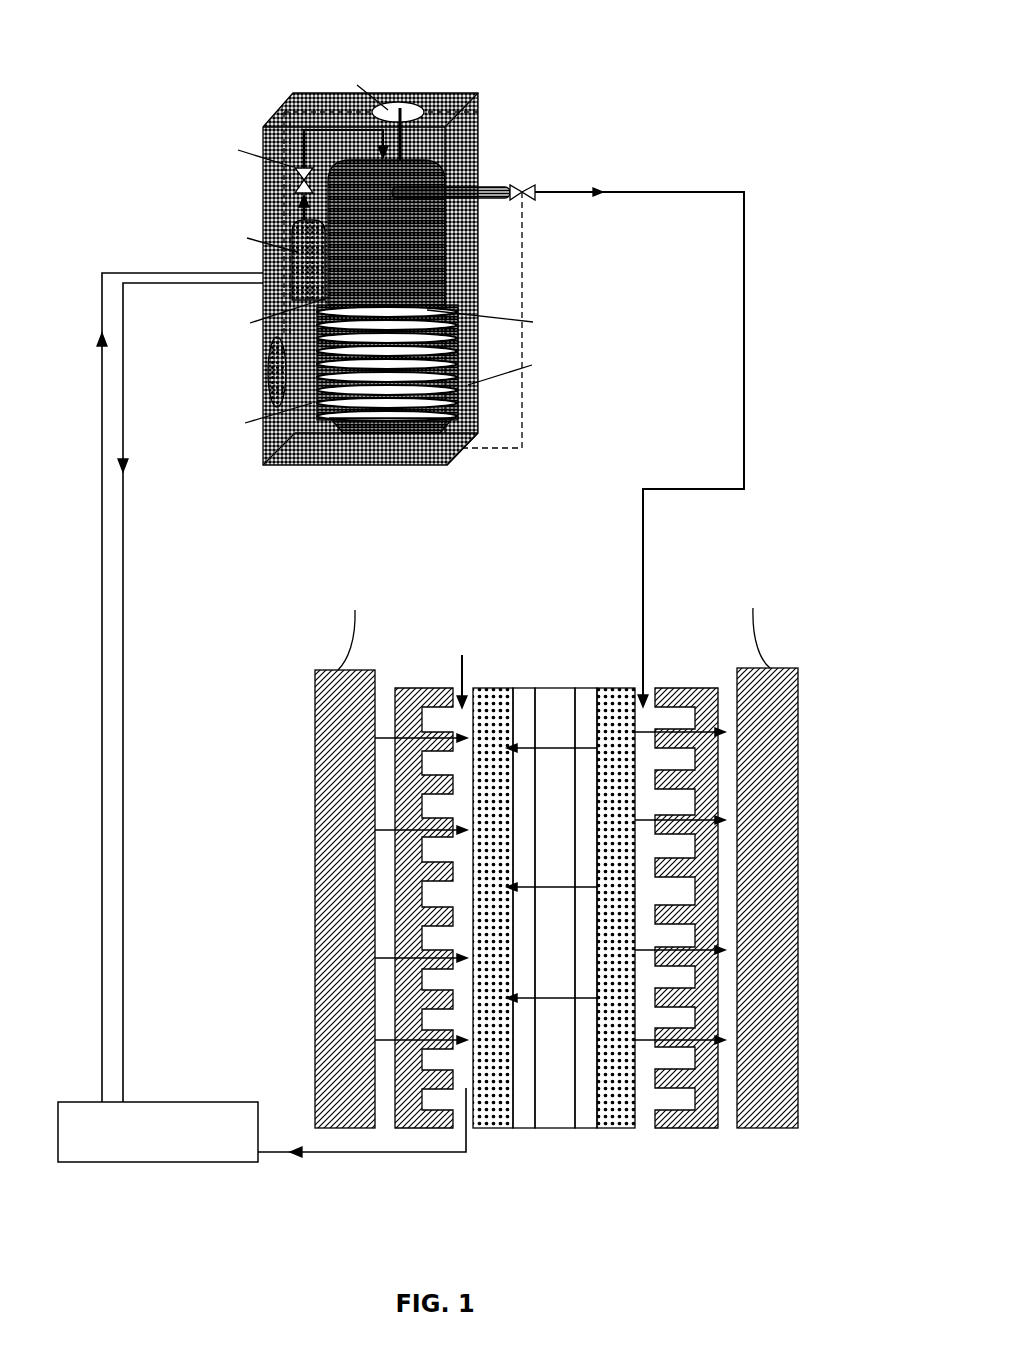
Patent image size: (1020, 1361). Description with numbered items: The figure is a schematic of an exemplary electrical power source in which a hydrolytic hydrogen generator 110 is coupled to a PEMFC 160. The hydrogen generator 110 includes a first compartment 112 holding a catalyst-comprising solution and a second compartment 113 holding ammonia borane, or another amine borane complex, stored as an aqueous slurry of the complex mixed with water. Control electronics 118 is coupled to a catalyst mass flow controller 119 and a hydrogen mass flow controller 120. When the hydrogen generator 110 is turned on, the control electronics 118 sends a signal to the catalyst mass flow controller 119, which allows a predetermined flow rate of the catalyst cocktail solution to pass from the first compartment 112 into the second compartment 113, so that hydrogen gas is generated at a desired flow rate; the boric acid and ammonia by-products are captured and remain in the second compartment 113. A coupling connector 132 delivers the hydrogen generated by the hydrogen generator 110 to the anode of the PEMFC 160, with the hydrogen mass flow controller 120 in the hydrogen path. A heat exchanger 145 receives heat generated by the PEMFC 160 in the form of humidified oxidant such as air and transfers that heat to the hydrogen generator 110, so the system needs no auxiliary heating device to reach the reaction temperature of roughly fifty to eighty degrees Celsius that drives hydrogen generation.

The hydrogen generator 110 is at (497, 88).
The first compartment 112 is at (163, 227).
The second compartment 113 is at (299, 277).
The control electronics 118 is at (236, 411).
The catalyst mass flow controller 119 is at (213, 136).
The hydrogen mass flow controller 120 is at (533, 198).
The coupling connector 132 is at (744, 192).
The heat exchanger 145 is at (162, 1162).
The PEMFC 160 is at (280, 1235).